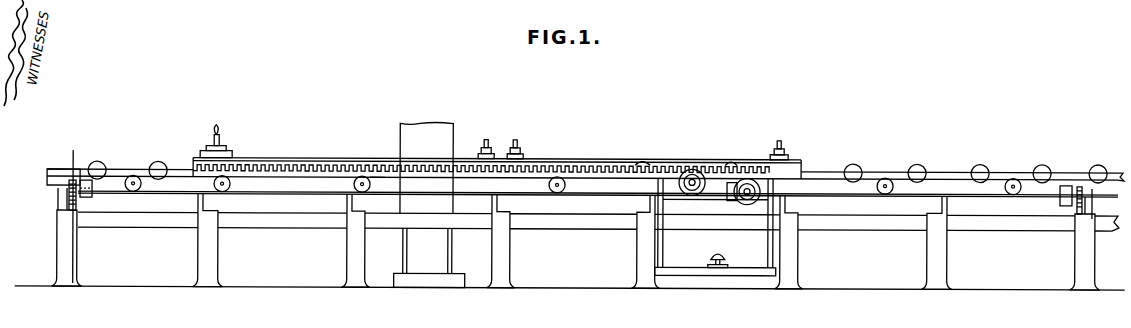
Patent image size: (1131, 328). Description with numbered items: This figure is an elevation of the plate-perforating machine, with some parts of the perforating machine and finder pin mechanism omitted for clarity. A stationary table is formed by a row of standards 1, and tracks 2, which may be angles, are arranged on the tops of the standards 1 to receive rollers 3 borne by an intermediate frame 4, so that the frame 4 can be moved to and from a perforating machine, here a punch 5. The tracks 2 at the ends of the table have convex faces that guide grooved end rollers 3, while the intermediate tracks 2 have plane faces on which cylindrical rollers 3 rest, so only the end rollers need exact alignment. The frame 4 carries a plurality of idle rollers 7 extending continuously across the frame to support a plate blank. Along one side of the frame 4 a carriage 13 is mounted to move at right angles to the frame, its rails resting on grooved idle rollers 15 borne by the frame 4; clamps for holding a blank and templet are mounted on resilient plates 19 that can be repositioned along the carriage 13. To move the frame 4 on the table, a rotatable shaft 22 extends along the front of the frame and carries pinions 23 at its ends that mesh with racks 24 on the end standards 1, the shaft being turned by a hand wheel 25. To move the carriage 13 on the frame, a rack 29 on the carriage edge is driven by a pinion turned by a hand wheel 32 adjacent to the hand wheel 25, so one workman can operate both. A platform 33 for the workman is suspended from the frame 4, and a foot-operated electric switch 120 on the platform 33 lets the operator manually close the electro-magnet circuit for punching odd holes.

The standards 1 is at (57, 246).
The tracks 2 is at (55, 208).
The rollers 3 is at (57, 192).
The intermediate frame 4 is at (47, 178).
The punch 5 is at (440, 130).
The idle rollers 7 is at (152, 162).
The carriage 13 is at (306, 157).
The grooved idle rollers 15 is at (557, 191).
The resilient plate 19 is at (233, 150).
The rotatable shaft 22 is at (288, 194).
The pinions 23 is at (72, 203).
The racks 24 is at (82, 203).
The hand wheel 25 is at (743, 200).
The rack 29 is at (377, 165).
The hand wheel 32 is at (692, 193).
The platform 33 is at (699, 273).
The foot-operated electric switch 120 is at (722, 248).